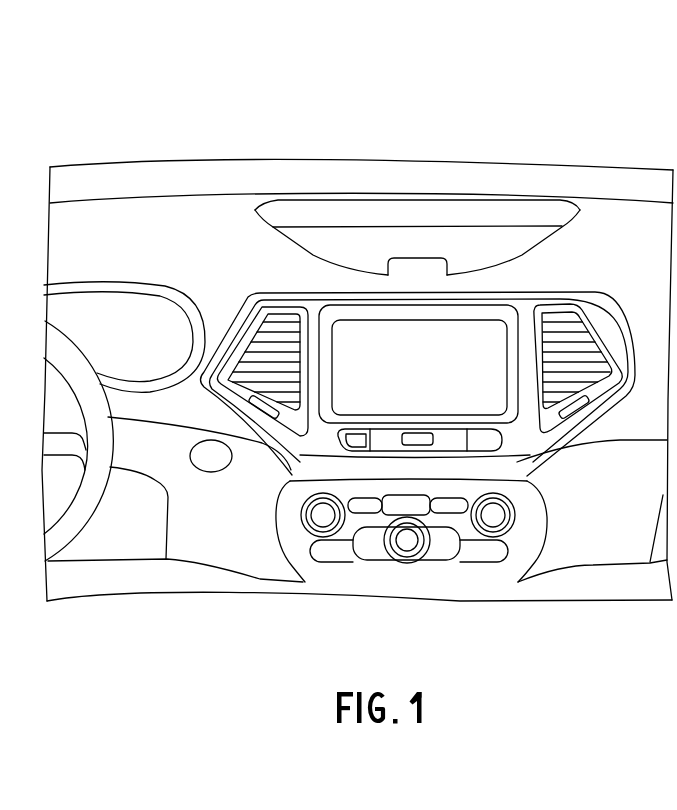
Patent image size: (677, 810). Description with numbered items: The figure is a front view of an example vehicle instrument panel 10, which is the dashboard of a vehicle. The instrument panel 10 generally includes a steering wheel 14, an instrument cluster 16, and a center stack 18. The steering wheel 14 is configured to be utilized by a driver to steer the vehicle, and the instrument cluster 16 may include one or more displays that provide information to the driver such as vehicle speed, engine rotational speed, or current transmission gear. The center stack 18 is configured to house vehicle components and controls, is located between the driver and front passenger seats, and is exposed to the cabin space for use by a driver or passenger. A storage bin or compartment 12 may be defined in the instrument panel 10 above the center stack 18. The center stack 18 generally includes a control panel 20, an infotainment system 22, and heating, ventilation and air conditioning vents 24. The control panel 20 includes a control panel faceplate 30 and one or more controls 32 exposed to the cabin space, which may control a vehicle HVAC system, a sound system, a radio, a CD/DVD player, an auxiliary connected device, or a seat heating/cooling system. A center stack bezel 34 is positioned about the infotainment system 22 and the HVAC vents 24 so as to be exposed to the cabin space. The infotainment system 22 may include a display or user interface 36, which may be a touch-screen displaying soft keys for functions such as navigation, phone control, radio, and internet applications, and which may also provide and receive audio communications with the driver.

The vehicle instrument panel 10 is at (120, 138).
The storage bin or compartment 12 is at (376, 243).
The steering wheel 14 is at (52, 323).
The instrument cluster 16 is at (123, 314).
The center stack 18 is at (428, 614).
The control panel 20 is at (545, 564).
The infotainment system 22 is at (566, 278).
The HVAC vents 24 is at (262, 309).
The control panel faceplate 30 is at (305, 553).
The controls 32 is at (407, 540).
The center stack bezel 34 is at (524, 432).
The display or user interface 36 is at (478, 334).